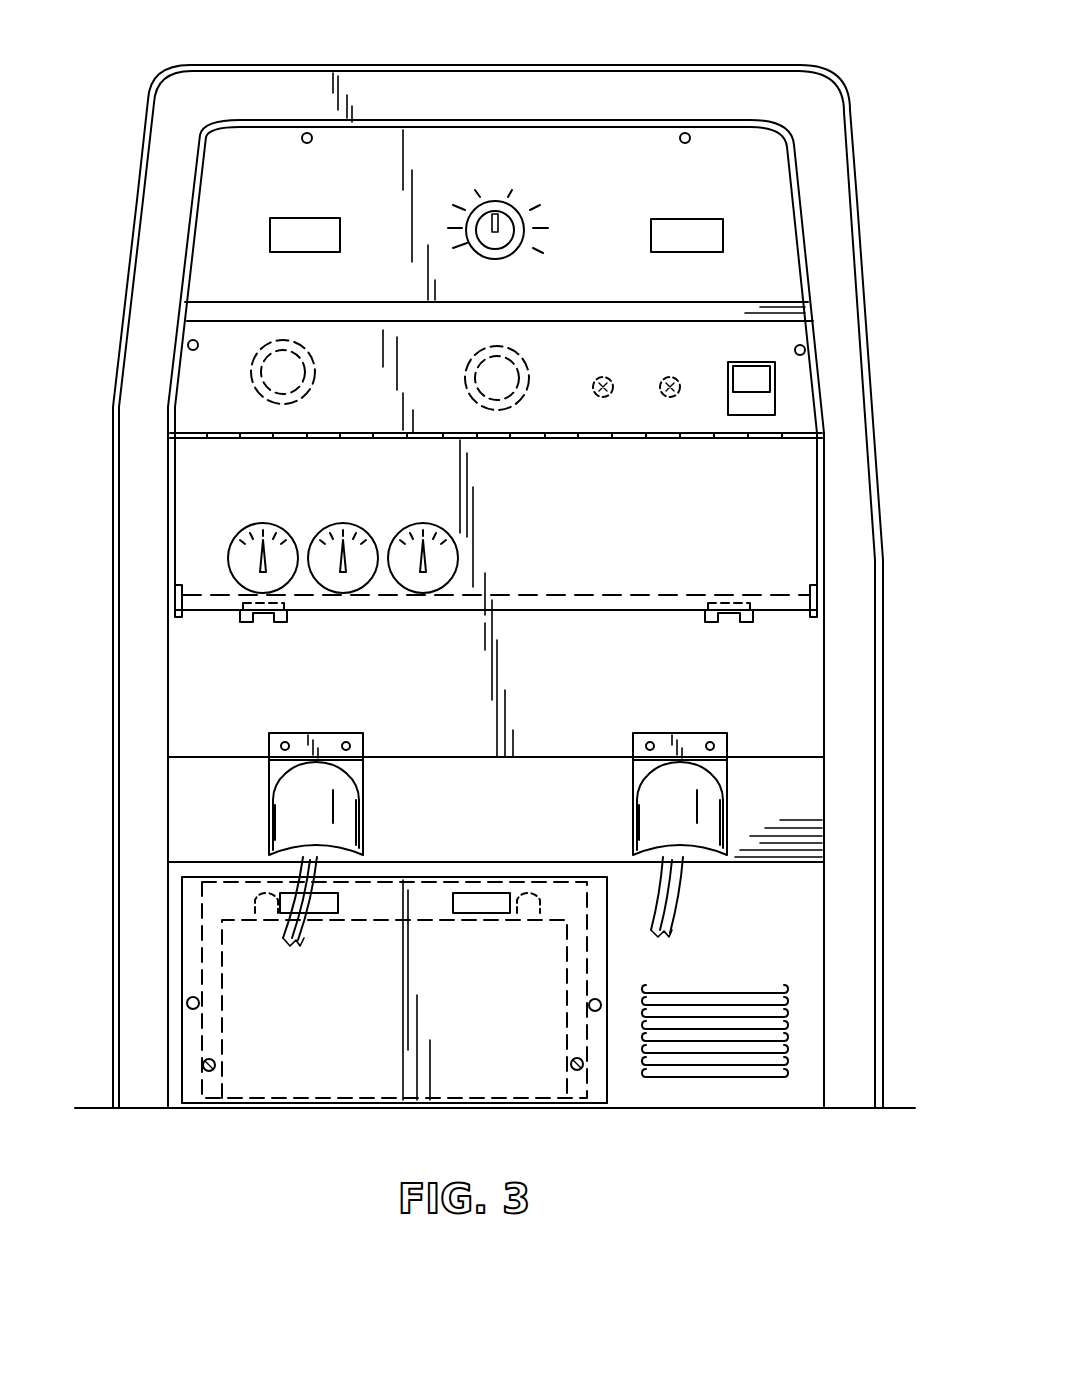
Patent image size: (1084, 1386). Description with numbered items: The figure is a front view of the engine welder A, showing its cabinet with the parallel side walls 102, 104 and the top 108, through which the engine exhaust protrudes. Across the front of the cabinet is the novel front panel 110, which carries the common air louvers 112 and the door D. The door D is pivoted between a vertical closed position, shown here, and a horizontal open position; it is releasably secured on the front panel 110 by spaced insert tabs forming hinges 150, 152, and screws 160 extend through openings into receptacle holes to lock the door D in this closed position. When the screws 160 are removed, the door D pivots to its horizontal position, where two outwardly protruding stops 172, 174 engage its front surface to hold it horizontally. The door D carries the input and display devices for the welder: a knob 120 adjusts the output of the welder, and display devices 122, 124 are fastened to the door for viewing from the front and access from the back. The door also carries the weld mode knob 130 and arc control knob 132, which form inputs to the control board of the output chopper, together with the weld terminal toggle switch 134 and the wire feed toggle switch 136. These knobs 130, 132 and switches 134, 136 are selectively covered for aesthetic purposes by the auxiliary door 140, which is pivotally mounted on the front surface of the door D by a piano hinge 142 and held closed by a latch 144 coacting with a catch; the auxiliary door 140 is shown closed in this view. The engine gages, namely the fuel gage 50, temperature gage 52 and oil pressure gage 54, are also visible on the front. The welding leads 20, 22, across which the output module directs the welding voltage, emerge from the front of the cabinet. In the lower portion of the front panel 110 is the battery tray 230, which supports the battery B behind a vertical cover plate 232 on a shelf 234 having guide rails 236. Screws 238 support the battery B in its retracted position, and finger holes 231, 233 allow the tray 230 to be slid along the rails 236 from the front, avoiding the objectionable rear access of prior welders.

The lead 20 is at (293, 935).
The lead 22 is at (683, 910).
The fuel gage 50 is at (237, 543).
The temperature gage 52 is at (365, 540).
The oil pressure gage 54 is at (458, 548).
The side wall 102 is at (110, 580).
The side wall 104 is at (883, 708).
The top 108 is at (575, 65).
The front panel 110 is at (800, 648).
The air louvers 112 is at (715, 1063).
The knob 120 is at (530, 214).
The display device 122 is at (272, 234).
The display device 124 is at (715, 234).
The weld mode knob 130 is at (298, 393).
The arc control knob 132 is at (510, 364).
The weld terminal toggle switch 134 is at (592, 396).
The wire feed toggle switch 136 is at (663, 398).
The auxiliary door 140 is at (710, 328).
The piano hinge 142 is at (666, 440).
The latch 144 is at (747, 390).
The hinge 150 is at (265, 622).
The hinge 152 is at (722, 622).
The screws 160 is at (306, 132).
The stop 172 is at (820, 600).
The stop 174 is at (175, 600).
The battery tray 230 is at (386, 893).
The finger hole 231 is at (490, 900).
The vertical cover plate 232 is at (335, 1075).
The finger hole 233 is at (322, 908).
The shelf 234 is at (445, 1105).
The guide rails 236 is at (209, 1072).
The screws 238 is at (188, 1000).
The engine welder A is at (745, 66).
The battery B is at (420, 925).
The door D is at (790, 481).